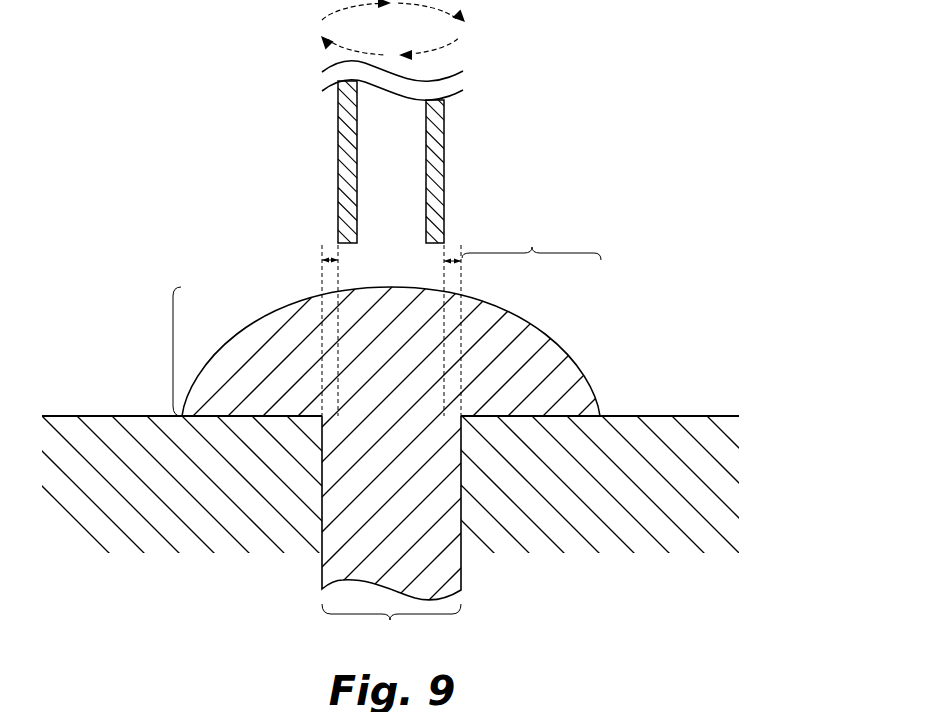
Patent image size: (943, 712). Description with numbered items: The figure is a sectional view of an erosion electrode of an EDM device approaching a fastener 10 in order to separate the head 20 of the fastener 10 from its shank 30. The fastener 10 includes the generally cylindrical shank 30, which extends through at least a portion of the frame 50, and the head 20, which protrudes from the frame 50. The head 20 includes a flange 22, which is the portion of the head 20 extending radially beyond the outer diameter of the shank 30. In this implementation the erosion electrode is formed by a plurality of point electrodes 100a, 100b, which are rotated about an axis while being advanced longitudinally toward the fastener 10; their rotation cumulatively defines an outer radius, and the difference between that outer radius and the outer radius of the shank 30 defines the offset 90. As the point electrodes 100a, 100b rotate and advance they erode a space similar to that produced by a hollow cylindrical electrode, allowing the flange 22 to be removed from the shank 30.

The fastener 10 is at (250, 284).
The head 20 is at (173, 352).
The flange 22 is at (532, 249).
The shank 30 is at (390, 618).
The frame 50 is at (739, 468).
The offset 90 is at (332, 252).
The point electrode 100a is at (444, 139).
The point electrode 100b is at (338, 140).